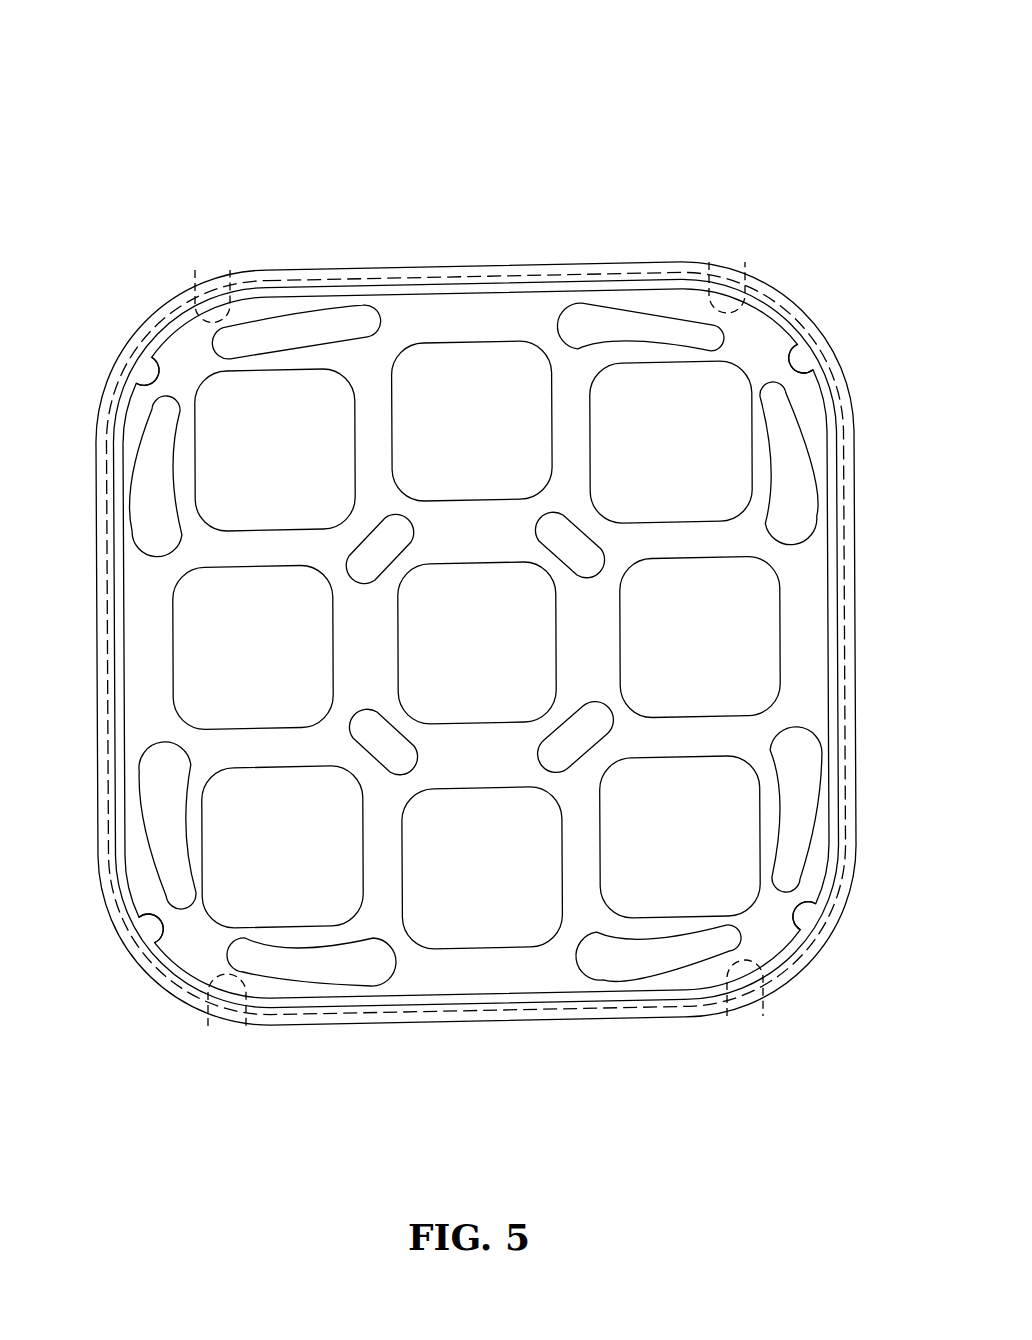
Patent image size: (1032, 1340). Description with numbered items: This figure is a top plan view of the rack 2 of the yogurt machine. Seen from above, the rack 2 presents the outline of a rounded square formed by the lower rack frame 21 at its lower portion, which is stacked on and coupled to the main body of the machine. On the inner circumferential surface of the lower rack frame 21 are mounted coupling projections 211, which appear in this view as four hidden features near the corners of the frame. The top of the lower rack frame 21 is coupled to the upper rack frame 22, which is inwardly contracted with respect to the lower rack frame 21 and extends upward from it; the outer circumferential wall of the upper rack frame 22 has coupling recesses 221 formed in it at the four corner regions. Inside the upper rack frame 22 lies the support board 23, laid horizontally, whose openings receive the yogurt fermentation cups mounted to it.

The rack 2 is at (531, 240).
The lower rack frame 21 is at (421, 263).
The coupling projections 211 is at (230, 278).
The upper rack frame 22 is at (315, 283).
The coupling recesses 221 is at (140, 368).
The support board 23 is at (489, 320).